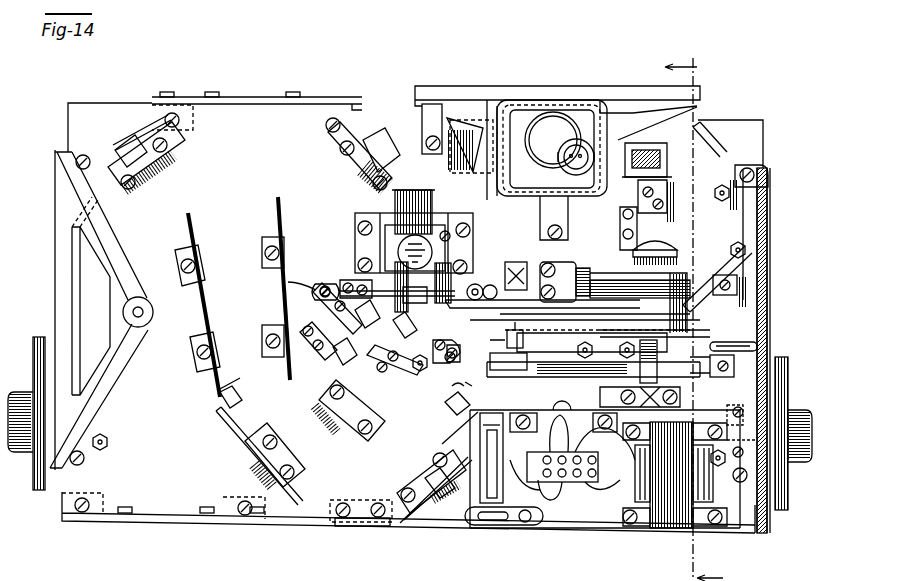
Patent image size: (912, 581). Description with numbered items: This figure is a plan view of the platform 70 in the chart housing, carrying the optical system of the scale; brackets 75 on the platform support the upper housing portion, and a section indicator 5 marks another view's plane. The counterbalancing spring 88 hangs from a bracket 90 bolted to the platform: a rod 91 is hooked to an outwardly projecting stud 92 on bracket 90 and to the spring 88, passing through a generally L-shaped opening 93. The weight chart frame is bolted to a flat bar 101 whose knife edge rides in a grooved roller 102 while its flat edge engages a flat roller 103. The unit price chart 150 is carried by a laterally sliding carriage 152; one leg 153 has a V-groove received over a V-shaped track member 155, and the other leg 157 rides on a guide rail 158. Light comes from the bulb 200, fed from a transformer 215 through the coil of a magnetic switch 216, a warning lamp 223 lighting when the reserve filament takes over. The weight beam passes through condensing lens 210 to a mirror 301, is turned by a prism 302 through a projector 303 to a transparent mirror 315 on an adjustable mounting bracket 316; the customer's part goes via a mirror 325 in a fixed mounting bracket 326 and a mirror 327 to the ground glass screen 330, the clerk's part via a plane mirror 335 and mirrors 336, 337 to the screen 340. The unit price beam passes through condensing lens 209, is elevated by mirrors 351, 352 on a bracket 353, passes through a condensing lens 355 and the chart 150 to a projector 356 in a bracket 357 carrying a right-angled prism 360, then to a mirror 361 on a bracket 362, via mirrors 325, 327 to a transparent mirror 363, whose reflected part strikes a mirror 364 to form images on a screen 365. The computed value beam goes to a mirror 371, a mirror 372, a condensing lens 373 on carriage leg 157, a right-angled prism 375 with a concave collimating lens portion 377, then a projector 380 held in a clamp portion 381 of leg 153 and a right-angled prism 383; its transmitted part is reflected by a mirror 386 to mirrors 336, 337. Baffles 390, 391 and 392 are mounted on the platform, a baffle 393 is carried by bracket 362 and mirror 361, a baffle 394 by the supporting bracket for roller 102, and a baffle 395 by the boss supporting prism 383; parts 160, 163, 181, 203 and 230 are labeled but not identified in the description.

The section line 5 is at (706, 319).
The platform 70 is at (122, 116).
The brackets 75 is at (62, 172).
The counterbalancing spring 88 is at (398, 252).
The bracket 90 is at (396, 206).
The rod 91 is at (455, 254).
The stud 92 is at (448, 234).
The L-shaped opening 93 is at (368, 222).
The flat bar 101 is at (405, 258).
The grooved roller 102 is at (452, 278).
The flat roller 103 is at (372, 286).
The chart 150 is at (692, 338).
The carriage 152 is at (700, 316).
The leg 153 is at (592, 345).
The V-shaped track member 155 is at (736, 366).
The leg 157 is at (652, 280).
The guide rail 158 is at (740, 283).
The knob 160 is at (790, 460).
The knob 163 is at (40, 492).
The slot 181 is at (758, 345).
The bulb 200 is at (553, 116).
The screw 203 is at (428, 138).
The condensing lens 209 is at (628, 165).
The condensing lens 210 is at (490, 120).
The transformer 215 is at (670, 530).
The magnetic switch 216 is at (496, 520).
The warning lamp 223 is at (522, 524).
The socket 230 is at (578, 142).
The mirror 301 is at (463, 154).
The prism 302 is at (487, 357).
The projector 303 is at (390, 372).
The transparent mirror 315 is at (398, 338).
The adjustable mounting bracket 316 is at (288, 284).
The mirror 325 is at (410, 520).
The fixed mounting bracket 326 is at (445, 505).
The mirror 327 is at (297, 528).
The ground glass screen 330 is at (276, 97).
The plane mirror 335 is at (335, 312).
The mirror 336 is at (335, 142).
The mirror 337 is at (140, 137).
The ground glass screen 340 is at (140, 527).
The mirror 351 is at (668, 172).
The mirror 352 is at (672, 142).
The bracket 353 is at (662, 200).
The condensing lens 355 is at (668, 248).
The projector 356 is at (660, 372).
The bracket 357 is at (676, 398).
The right-angled prism 360 is at (622, 398).
The mirror 361 is at (472, 401).
The bracket 362 is at (455, 404).
The transparent mirror 363 is at (218, 405).
The mirror 364 is at (318, 433).
The screen 365 is at (380, 530).
The mirror 371 is at (712, 140).
The mirror 372 is at (768, 232).
The condensing lens 373 is at (648, 284).
The right-angled prism 375 is at (516, 264).
The concave collimating lens portion 377 is at (560, 262).
The projector 380 is at (520, 348).
The clamp portion 381 is at (440, 366).
The right-angled prism 383 is at (544, 402).
The mirror 386 is at (320, 372).
The baffle 390 is at (196, 228).
The baffle 391 is at (276, 200).
The baffle 392 is at (572, 460).
The baffle 393 is at (472, 390).
The baffle 394 is at (490, 296).
The baffle 395 is at (498, 333).